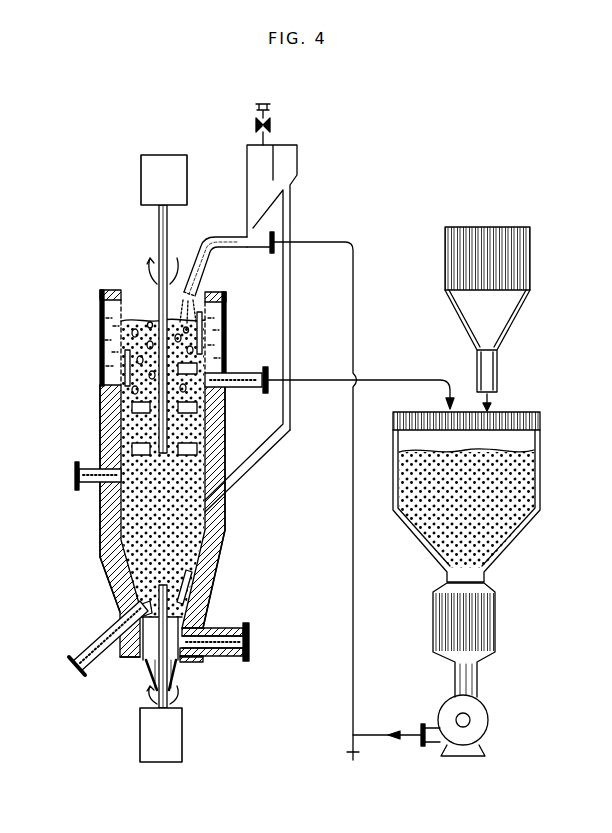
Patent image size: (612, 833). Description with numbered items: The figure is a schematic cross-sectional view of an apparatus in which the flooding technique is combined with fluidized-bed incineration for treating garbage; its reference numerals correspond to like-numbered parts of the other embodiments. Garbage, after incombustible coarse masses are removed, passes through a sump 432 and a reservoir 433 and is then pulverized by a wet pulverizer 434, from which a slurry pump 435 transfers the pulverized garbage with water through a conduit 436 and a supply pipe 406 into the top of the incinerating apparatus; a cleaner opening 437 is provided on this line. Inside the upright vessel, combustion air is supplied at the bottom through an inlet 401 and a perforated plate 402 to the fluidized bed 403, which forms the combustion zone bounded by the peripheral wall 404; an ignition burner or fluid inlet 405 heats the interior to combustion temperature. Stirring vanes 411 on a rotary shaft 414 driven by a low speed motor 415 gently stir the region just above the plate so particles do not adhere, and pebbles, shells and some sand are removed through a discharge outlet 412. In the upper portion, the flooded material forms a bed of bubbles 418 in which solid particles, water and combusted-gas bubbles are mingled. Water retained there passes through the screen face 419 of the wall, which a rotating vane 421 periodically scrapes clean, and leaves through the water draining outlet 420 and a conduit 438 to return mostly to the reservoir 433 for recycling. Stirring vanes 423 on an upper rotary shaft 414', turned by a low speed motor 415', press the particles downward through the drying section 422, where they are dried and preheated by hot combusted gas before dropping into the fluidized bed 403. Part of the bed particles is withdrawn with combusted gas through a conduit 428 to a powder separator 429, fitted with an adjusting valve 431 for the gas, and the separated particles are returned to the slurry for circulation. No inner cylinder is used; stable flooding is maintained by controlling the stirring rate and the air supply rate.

The inlet 401 is at (230, 658).
The perforated plate 402 is at (180, 662).
The fluidized bed 403 is at (212, 562).
The peripheral wall 404 is at (220, 540).
The ignition burner or fluid inlet 405 is at (86, 492).
The supply pipe 406 is at (216, 235).
The stirring vanes 411 is at (200, 594).
The discharge outlet 412 is at (78, 660).
The rotary shaft 414 is at (133, 648).
The rotary shaft 414' is at (135, 329).
The low speed motor 415 is at (189, 735).
The low speed motor 415' is at (136, 180).
The bed of bubbles 418 is at (121, 337).
The screen face 419 is at (100, 296).
The water draining outlet 420 is at (258, 374).
The vane 421 is at (127, 372).
The drying section 422 is at (132, 430).
The stirring vanes 423 is at (130, 407).
The conduit 428 is at (280, 465).
The powder separator 429 is at (298, 163).
The adjusting valve 431 is at (272, 126).
The sump 432 is at (530, 252).
The reservoir 433 is at (530, 480).
The wet pulverizer 434 is at (495, 623).
The slurry pump 435 is at (488, 716).
The conduit 436 is at (353, 606).
The cleaner opening 437 is at (351, 760).
The conduit 438 is at (410, 380).